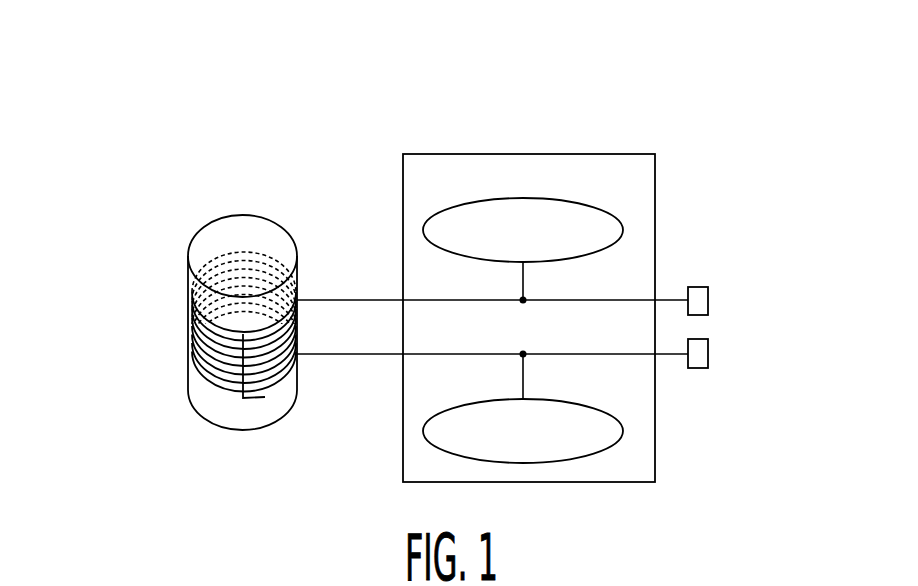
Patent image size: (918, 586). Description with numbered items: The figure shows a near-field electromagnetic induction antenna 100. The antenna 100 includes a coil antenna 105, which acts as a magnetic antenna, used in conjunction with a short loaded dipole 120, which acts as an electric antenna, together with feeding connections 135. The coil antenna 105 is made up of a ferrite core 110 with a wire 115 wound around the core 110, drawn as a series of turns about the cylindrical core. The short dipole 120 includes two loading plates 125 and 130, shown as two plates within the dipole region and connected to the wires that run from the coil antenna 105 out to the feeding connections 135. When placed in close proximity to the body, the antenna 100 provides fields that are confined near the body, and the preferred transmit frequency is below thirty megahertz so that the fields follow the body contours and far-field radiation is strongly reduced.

The antenna 100 is at (231, 98).
The coil antenna 105 is at (168, 182).
The ferrite core 110 is at (205, 228).
The wire 115 is at (188, 333).
The short loaded dipole 120 is at (452, 153).
The loading plate 125 is at (623, 233).
The loading plate 130 is at (622, 432).
The feeding connections 135 is at (708, 295).